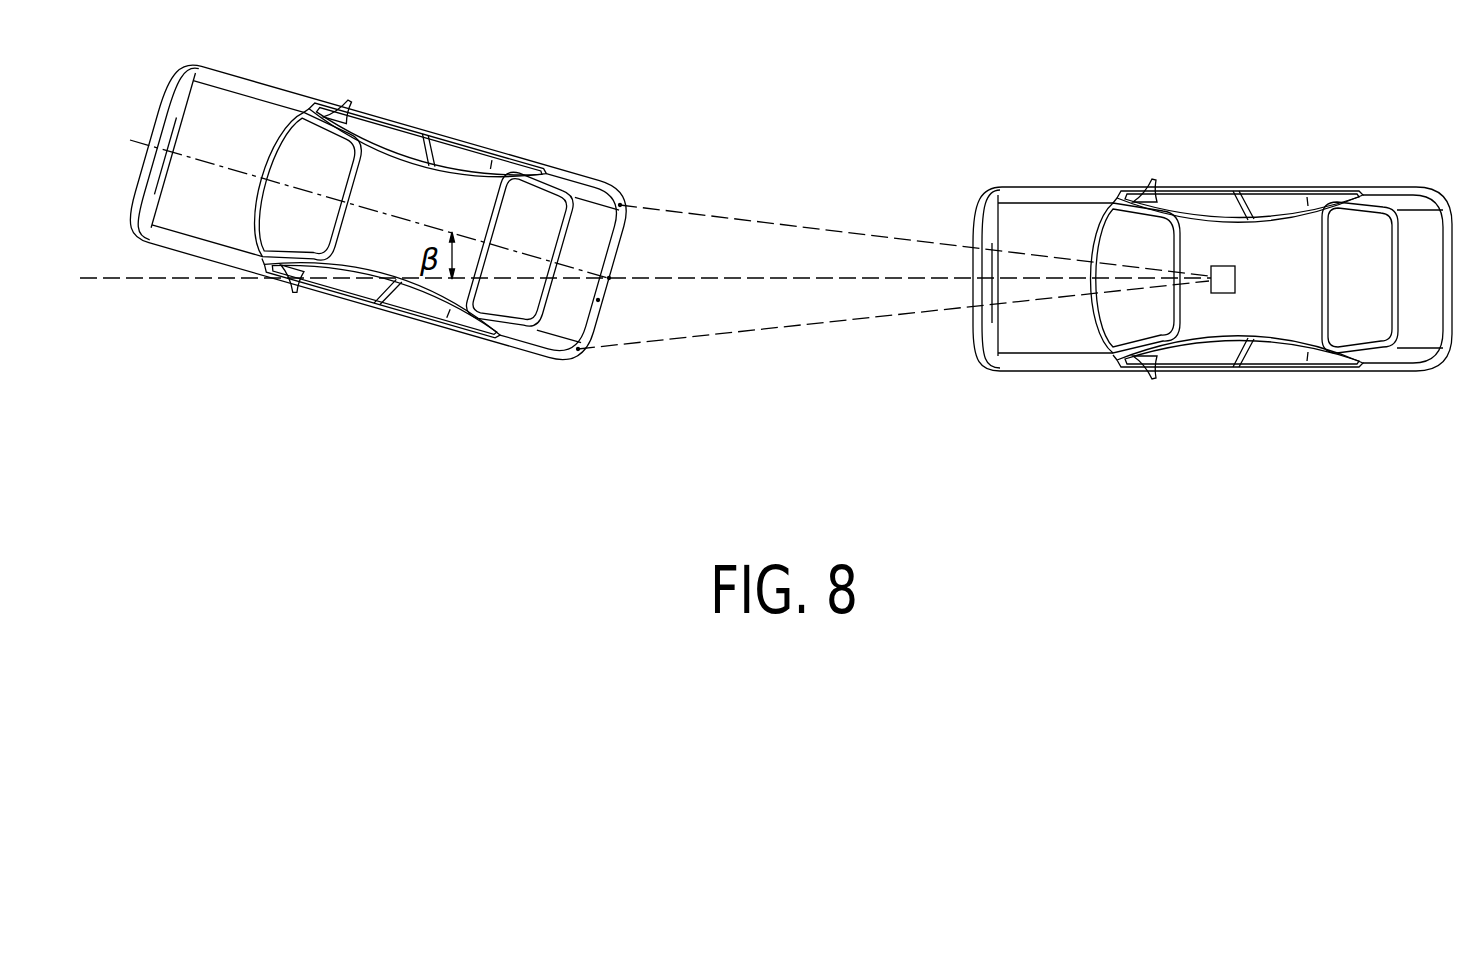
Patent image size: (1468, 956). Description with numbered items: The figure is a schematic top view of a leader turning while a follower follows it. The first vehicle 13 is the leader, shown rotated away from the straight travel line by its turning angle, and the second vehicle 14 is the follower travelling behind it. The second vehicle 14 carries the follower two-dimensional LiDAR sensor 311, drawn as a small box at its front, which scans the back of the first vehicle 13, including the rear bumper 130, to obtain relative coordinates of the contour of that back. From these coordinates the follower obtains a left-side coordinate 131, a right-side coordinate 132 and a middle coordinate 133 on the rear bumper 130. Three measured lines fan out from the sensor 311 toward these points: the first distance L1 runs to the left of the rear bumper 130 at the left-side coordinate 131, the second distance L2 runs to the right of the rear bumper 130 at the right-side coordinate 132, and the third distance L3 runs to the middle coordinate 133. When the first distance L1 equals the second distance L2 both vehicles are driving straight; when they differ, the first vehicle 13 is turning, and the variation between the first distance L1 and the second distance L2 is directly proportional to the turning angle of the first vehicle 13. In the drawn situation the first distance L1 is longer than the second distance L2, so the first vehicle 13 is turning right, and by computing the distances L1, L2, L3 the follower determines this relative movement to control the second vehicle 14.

The first vehicle 13 is at (467, 109).
The second vehicle 14 is at (1255, 150).
The rear bumper 130 is at (597, 305).
The left-side coordinate 131 is at (578, 350).
The right-side coordinate 132 is at (620, 206).
The middle coordinate 133 is at (610, 279).
The follower two-dimensional LiDAR sensor 311 is at (1228, 277).
The first distance L1 is at (866, 318).
The second distance L2 is at (834, 232).
The third distance L3 is at (808, 280).